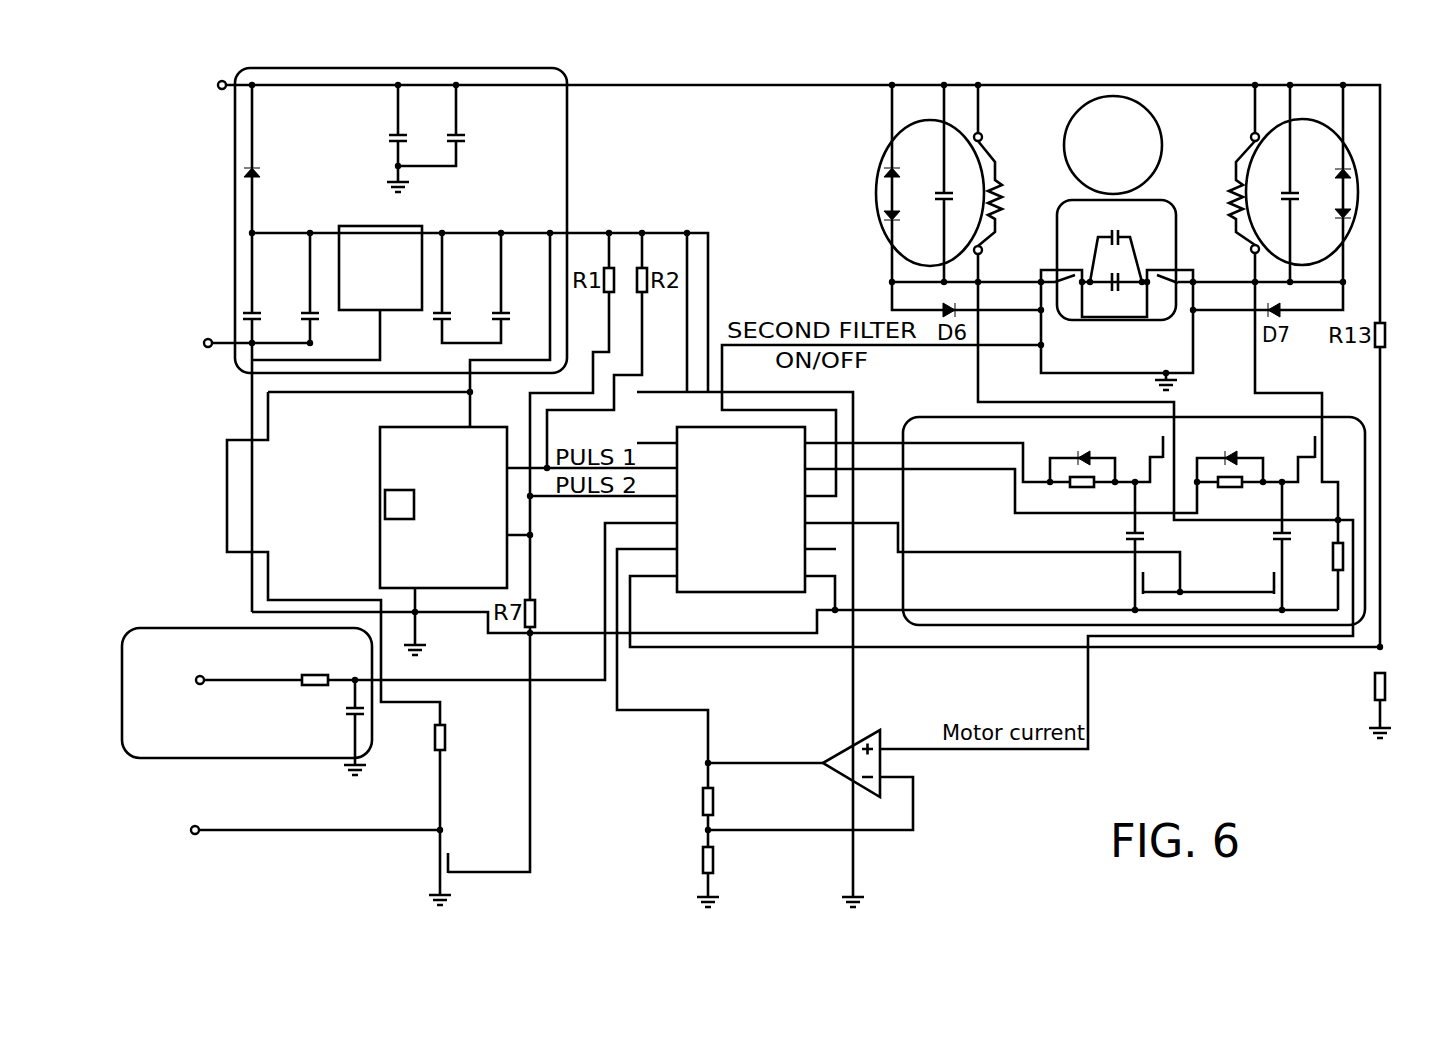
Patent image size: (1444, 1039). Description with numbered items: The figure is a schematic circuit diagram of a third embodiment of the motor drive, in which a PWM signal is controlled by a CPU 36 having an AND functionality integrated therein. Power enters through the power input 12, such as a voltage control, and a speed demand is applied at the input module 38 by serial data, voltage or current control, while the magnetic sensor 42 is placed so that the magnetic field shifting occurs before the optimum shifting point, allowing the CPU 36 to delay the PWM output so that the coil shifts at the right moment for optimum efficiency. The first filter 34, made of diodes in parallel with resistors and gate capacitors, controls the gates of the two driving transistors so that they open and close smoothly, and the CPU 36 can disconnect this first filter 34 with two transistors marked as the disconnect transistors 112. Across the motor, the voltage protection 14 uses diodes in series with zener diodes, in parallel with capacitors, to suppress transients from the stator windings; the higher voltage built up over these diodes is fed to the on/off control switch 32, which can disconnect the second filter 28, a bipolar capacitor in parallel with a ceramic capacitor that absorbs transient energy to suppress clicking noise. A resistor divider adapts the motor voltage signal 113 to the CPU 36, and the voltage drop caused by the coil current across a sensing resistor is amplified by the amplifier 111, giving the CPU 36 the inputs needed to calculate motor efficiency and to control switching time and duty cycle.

The power input 12 is at (235, 193).
The voltage protection 14 is at (886, 163).
The second filter 28 is at (1174, 310).
The on/off control switch 32 is at (1041, 354).
The first filter 34 is at (1134, 493).
The PWM and RPM control module 36 is at (696, 593).
The input module 38 is at (220, 628).
The magnetic sensor 42 is at (380, 432).
The amplifier 111 is at (831, 804).
The first filter disconnect transistors 112 is at (1210, 585).
The motor voltage signal 113 is at (1302, 685).